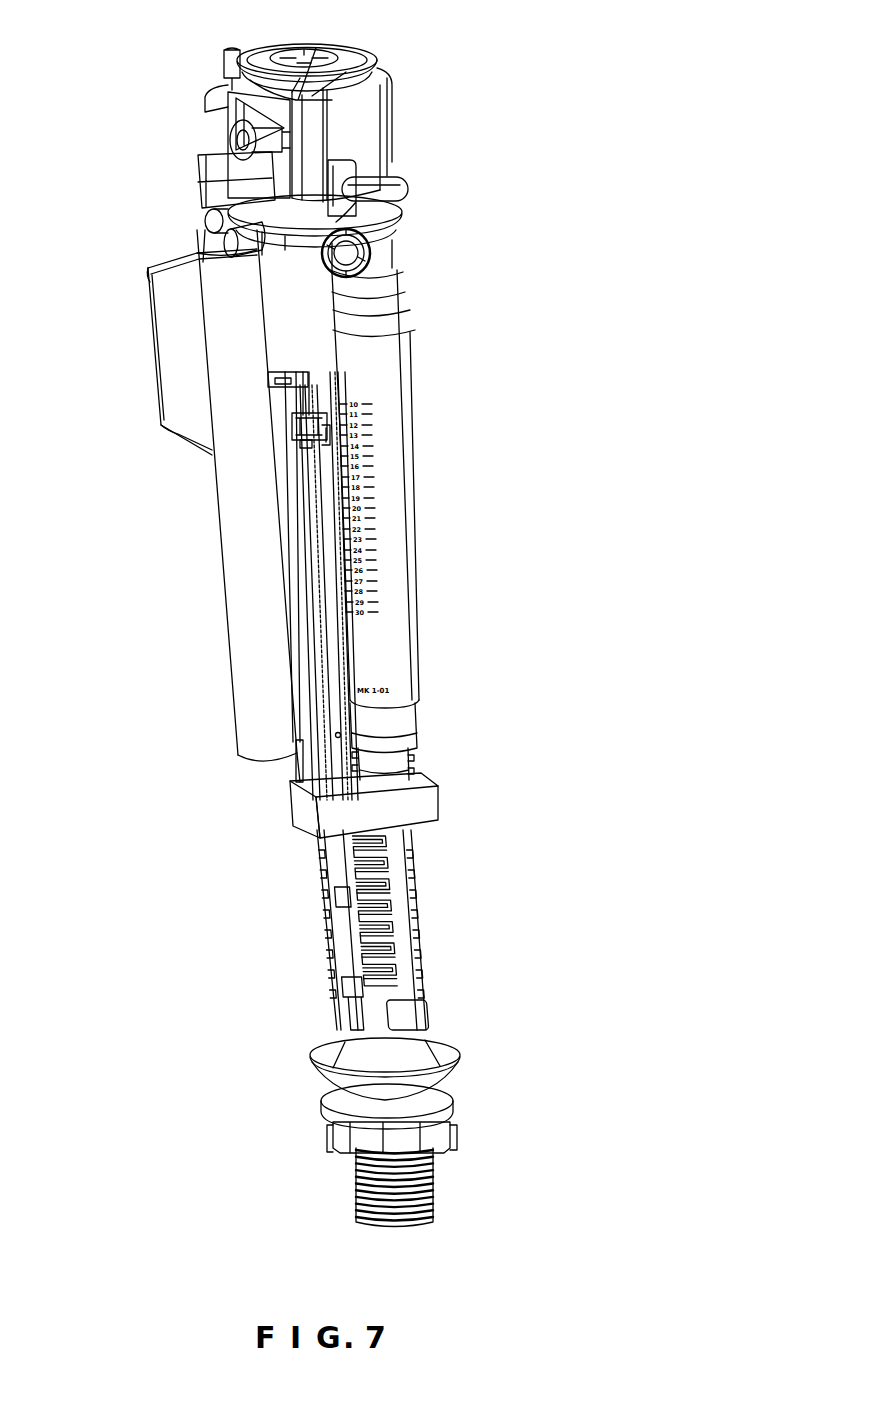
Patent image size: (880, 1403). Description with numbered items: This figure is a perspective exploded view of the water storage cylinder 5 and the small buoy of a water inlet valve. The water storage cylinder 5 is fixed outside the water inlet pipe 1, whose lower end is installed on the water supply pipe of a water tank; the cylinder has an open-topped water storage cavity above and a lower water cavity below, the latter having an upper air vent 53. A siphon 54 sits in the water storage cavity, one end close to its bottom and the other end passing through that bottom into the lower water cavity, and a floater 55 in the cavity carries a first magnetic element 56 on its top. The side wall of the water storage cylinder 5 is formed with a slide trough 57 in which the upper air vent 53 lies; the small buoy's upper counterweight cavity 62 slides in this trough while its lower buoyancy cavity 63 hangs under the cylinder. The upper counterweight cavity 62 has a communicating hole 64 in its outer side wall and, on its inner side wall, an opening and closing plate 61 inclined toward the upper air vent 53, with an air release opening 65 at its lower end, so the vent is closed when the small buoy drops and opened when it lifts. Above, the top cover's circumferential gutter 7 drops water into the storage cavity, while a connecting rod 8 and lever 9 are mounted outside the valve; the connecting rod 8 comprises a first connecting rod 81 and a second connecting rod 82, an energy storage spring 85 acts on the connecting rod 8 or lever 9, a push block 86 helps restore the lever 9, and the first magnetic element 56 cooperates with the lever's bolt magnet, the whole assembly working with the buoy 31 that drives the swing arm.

The water inlet pipe 1 is at (397, 855).
The water storage cylinder 5 is at (215, 342).
The gutter 7 is at (350, 78).
The connecting rod 8 is at (379, 230).
The lever 9 is at (212, 180).
The buoy 31 is at (178, 298).
The upper air vent 53 is at (270, 382).
The siphon 54 is at (375, 254).
The floater 55 is at (200, 248).
The first magnetic element 56 is at (217, 231).
The slide trough 57 is at (297, 570).
The opening and closing plate 61 is at (297, 420).
The upper counterweight cavity 62 is at (332, 660).
The lower buoyancy cavity 63 is at (300, 812).
The communicating hole 64 is at (338, 735).
The air release opening 65 is at (297, 443).
The first connecting rod 81 is at (380, 225).
The second connecting rod 82 is at (393, 210).
The energy storage spring 85 is at (316, 48).
The push block 86 is at (413, 190).